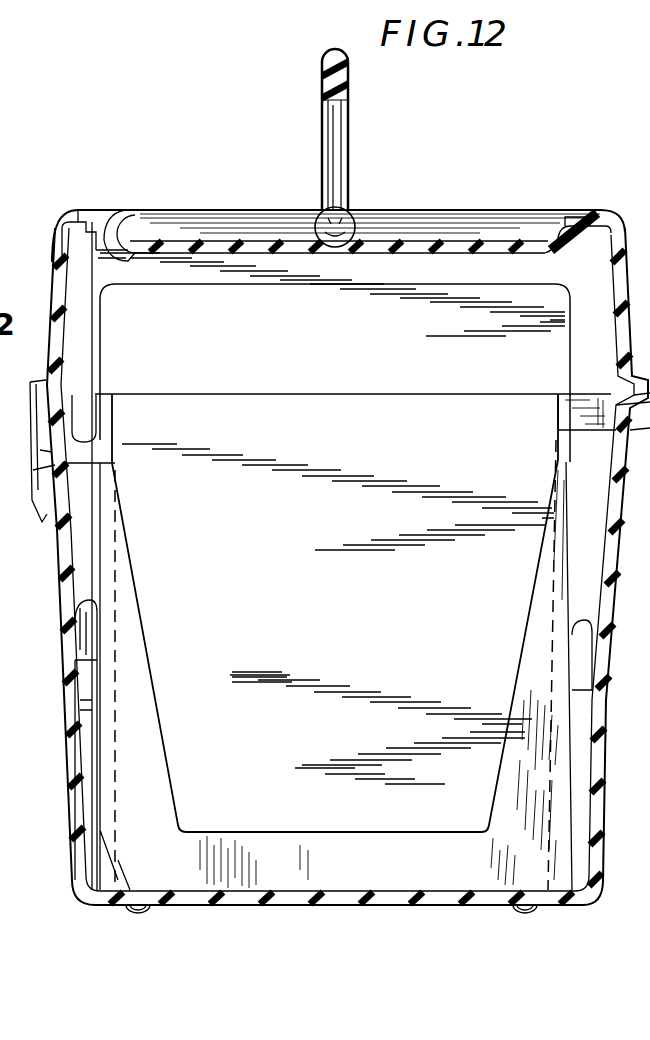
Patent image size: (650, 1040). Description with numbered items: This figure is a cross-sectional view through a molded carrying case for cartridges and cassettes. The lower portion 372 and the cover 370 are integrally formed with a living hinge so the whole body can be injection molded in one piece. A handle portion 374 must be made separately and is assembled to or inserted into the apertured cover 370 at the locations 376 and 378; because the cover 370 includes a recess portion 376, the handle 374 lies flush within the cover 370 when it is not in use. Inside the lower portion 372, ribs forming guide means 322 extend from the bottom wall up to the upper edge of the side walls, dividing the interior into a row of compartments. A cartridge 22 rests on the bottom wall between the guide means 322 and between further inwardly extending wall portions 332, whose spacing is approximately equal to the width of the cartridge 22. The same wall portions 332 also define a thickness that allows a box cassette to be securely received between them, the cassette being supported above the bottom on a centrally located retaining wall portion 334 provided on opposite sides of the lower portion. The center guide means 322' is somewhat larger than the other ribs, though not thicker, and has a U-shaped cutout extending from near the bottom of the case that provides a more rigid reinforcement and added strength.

The cartridge 22 is at (530, 290).
The guide means 322 is at (338, 641).
The center guide means 322' is at (336, 665).
The further inwardly extending wall portions 332 is at (86, 610).
The retaining wall portion 334 is at (88, 683).
The cover 370 is at (560, 210).
The lower portion 372 is at (62, 583).
The handle portion 374 is at (349, 137).
The recess portion 376 is at (166, 250).
The handle attachment location 378 is at (318, 234).